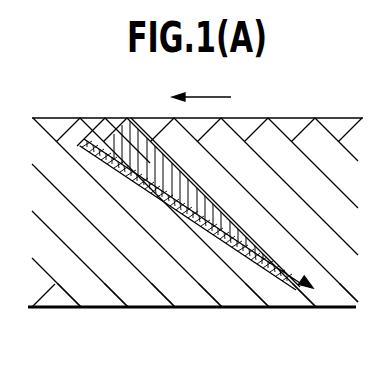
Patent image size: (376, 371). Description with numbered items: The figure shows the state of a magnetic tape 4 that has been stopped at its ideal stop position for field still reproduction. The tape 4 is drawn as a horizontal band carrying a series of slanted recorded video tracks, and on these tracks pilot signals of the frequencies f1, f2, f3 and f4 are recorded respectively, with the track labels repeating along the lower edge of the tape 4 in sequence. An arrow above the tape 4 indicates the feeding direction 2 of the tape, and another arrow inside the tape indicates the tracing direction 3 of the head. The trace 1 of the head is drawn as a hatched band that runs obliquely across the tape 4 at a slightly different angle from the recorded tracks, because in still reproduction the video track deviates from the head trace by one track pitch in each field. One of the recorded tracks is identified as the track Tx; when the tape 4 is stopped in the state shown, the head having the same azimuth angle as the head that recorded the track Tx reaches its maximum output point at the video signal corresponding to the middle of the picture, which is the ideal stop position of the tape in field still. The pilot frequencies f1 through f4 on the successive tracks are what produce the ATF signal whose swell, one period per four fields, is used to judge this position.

The trace of the head 1 is at (288, 295).
The feeding direction of the tape 2 is at (207, 97).
The tracing direction of the head 3 is at (170, 236).
The tape 4 is at (336, 124).
The track Tx is at (130, 127).
The pilot signal frequency f1 is at (216, 284).
The pilot signal frequency f2 is at (168, 284).
The pilot signal frequency f3 is at (264, 284).
The pilot signal frequency f4 is at (221, 284).